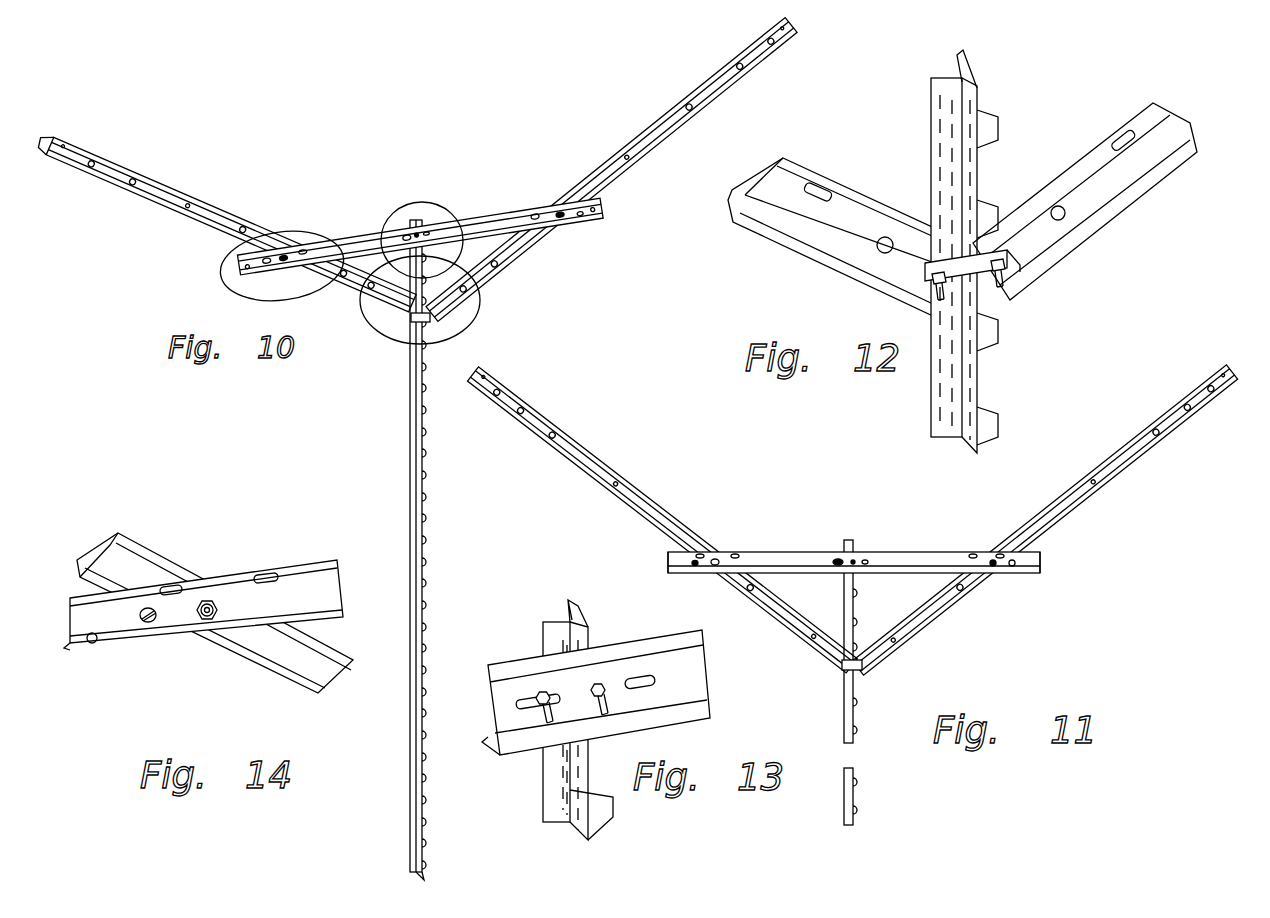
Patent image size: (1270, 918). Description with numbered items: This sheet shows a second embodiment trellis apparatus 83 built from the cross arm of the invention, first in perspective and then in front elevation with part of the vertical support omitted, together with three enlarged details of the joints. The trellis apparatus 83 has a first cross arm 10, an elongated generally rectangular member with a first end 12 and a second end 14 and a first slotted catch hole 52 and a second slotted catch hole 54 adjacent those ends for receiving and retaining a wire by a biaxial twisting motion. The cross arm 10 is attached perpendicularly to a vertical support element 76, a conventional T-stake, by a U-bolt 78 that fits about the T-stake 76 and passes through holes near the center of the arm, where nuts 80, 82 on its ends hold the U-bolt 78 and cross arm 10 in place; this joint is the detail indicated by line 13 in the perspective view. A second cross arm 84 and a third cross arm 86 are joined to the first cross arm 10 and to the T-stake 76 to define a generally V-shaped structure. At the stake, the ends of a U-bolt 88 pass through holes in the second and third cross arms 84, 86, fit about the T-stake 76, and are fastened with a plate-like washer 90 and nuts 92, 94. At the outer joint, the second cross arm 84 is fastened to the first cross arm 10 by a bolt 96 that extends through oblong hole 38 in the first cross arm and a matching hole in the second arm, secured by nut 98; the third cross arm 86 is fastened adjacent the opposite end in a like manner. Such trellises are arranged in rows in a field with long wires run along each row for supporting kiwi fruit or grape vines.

In FIG. 10, the cross arm apparatus 10 is at (517, 213).
In FIG. 11, the cross arm apparatus 10 is at (810, 552).
In FIG. 13, the cross arm apparatus 10 is at (683, 680).
In FIG. 14, the cross arm apparatus 10 is at (290, 577).
In FIG. 10, the first end 12 is at (361, 303).
In FIG. 14, the first end 12 is at (70, 648).
In FIG. 10, the detail line 13— 13 is at (378, 224).
In FIG. 10, the second end 14 is at (247, 235).
In FIG. 14, the oblong hole 38 is at (197, 600).
In FIG. 11, the first slotted catch hole 52 is at (668, 562).
In FIG. 14, the first slotted catch hole 52 is at (93, 643).
In FIG. 11, the second slotted catch hole 54 is at (1042, 563).
In FIG. 10, the vertical support element 76 is at (411, 437).
In FIG. 11, the vertical support element 76 is at (853, 713).
In FIG. 12, the vertical support element 76 is at (988, 251).
In FIG. 13, the vertical support element 76 is at (553, 810).
In FIG. 13, the U-bolt 78 is at (555, 643).
In FIG. 13, the nut 80 is at (606, 684).
In FIG. 13, the nut 82 is at (536, 708).
In FIG. 10, the trellis apparatus 83 is at (378, 392).
In FIG. 11, the trellis apparatus 83 is at (907, 663).
In FIG. 10, the second cross arm 84 is at (140, 190).
In FIG. 11, the second cross arm 84 is at (640, 497).
In FIG. 12, the second cross arm 84 is at (822, 220).
In FIG. 14, the second cross arm 84 is at (128, 553).
In FIG. 10, the third cross arm 86 is at (645, 135).
In FIG. 11, the third cross arm 86 is at (1078, 497).
In FIG. 12, the third cross arm 86 is at (1090, 192).
In FIG. 12, the U-bolt 88 is at (1010, 278).
In FIG. 12, the plate-like washer 90 is at (987, 278).
In FIG. 12, the nut 92 is at (905, 281).
In FIG. 12, the nut 94 is at (1019, 262).
In FIG. 14, the bolt 96 is at (211, 618).
In FIG. 14, the nut 98 is at (203, 616).